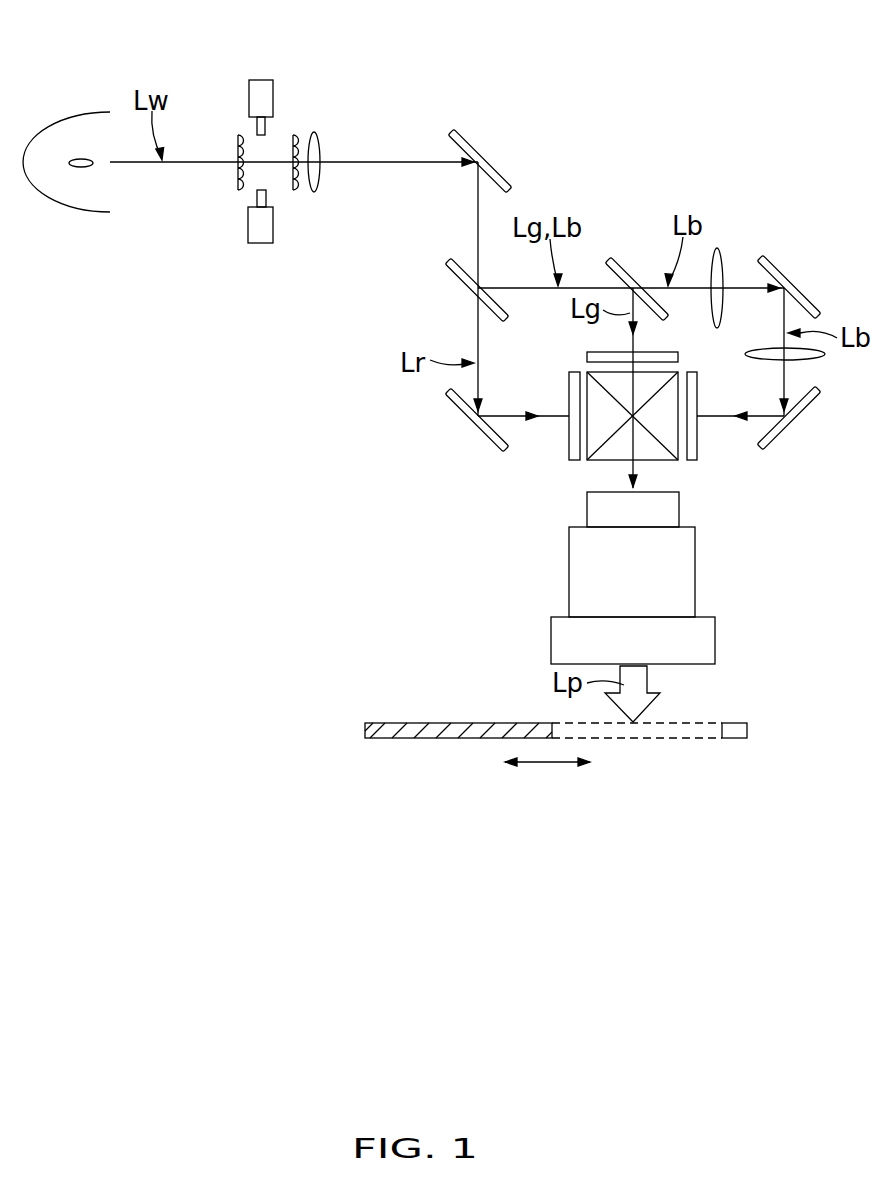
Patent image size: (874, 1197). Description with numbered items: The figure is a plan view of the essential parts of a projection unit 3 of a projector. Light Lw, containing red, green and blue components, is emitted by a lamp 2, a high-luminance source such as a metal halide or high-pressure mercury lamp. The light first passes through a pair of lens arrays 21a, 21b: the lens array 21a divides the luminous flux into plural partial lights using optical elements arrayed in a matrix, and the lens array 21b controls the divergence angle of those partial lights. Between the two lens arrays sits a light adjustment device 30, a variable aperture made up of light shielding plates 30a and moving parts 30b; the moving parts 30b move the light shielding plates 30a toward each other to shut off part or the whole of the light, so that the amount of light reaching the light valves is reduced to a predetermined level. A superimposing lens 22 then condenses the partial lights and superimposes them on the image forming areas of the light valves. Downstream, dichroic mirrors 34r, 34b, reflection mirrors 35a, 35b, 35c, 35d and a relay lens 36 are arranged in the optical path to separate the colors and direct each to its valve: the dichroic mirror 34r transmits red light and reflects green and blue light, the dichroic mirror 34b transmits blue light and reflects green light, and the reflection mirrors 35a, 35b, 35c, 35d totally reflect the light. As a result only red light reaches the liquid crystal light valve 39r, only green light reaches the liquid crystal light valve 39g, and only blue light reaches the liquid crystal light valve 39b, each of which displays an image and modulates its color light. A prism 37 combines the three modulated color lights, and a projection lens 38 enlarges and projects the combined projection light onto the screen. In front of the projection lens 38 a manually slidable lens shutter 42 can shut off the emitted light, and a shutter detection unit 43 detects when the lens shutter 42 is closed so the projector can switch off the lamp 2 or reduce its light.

The lamp 2 is at (38, 210).
The projection unit 3 is at (680, 106).
The lens array 21a is at (237, 191).
The lens array 21b is at (294, 191).
The superimposing lens 22 is at (321, 153).
The light adjustment device 30 is at (263, 165).
The light shielding plates 30a is at (263, 127).
The moving parts 30b is at (261, 97).
The dichroic mirror 34r is at (452, 278).
The dichroic mirror 34b is at (628, 270).
The reflection mirror 35a is at (497, 121).
The reflection mirror 35b is at (462, 415).
The reflection mirror 35c is at (790, 280).
The reflection mirror 35d is at (777, 443).
The relay lens 36 is at (723, 272).
The prism 37 is at (603, 463).
The projection lens 38 is at (582, 573).
The liquid crystal light valve 39r is at (568, 445).
The liquid crystal light valve 39g is at (587, 357).
The liquid crystal light valve 39b is at (698, 453).
The lens shutter 42 is at (422, 722).
The shutter detection unit 43 is at (748, 730).